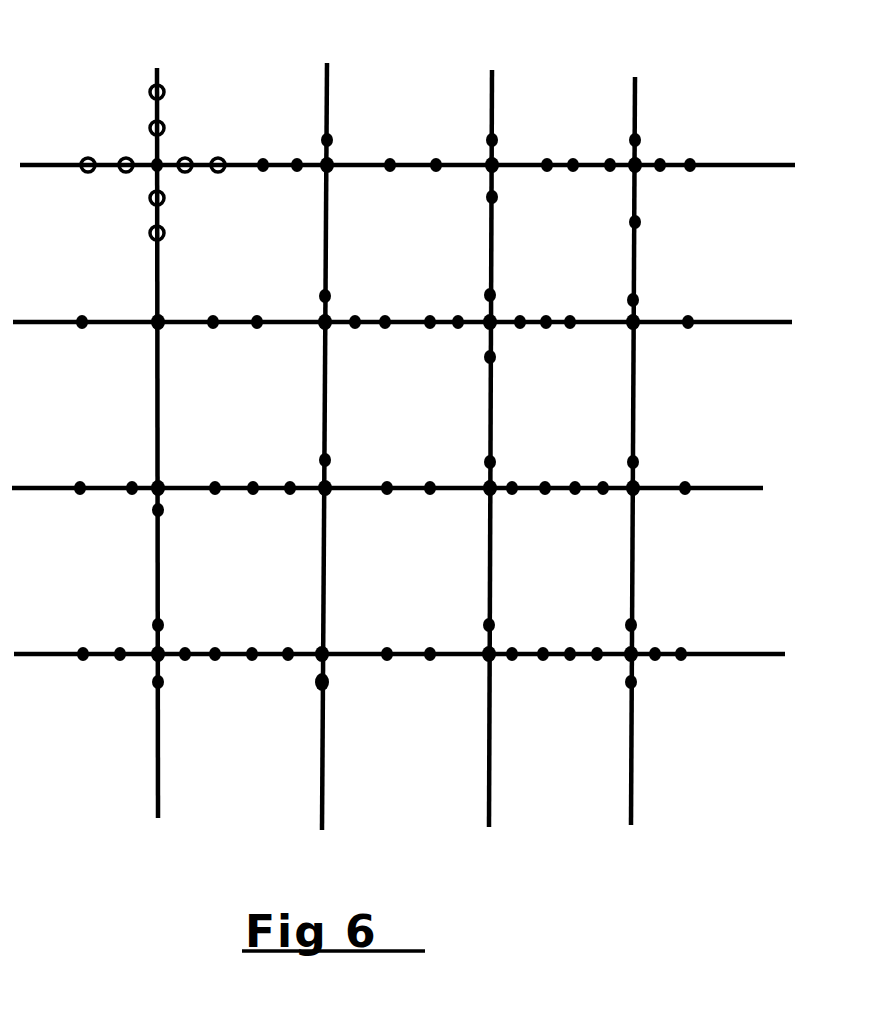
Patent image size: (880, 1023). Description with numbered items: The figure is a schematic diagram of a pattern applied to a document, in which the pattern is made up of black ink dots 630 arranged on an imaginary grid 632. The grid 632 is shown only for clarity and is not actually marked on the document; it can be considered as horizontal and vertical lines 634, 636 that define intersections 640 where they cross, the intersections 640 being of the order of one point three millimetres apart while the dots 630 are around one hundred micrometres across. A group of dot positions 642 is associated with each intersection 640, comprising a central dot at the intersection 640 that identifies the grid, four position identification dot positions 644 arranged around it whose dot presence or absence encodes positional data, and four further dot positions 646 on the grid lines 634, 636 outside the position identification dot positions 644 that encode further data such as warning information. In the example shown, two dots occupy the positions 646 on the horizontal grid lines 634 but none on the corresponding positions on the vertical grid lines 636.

The black ink dots 630 is at (330, 140).
The imaginary grid 632 is at (493, 105).
The horizontal lines 634 is at (735, 165).
The vertical lines 636 is at (634, 100).
The intersections 640 is at (640, 170).
The group of dot positions 642 is at (150, 92).
The position identification dot positions 644 is at (152, 198).
The further dot positions 646 is at (218, 160).